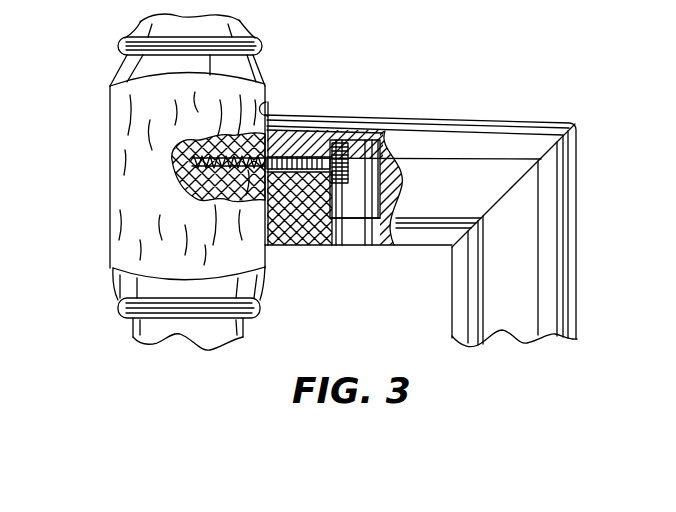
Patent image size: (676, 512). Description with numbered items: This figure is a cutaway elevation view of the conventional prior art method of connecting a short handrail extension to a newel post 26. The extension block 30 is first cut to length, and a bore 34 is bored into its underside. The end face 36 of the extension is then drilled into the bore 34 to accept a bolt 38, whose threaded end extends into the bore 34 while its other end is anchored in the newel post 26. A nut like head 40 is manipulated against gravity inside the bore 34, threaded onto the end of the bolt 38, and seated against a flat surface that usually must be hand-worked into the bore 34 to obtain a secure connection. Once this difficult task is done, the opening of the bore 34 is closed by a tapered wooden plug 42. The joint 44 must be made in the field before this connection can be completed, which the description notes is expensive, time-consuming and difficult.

The newel post 26 is at (108, 117).
The extension block 30 is at (498, 118).
The bore 34 is at (400, 179).
The end face 36 is at (267, 103).
The bolt 38 is at (305, 145).
The nut like head 40 is at (377, 140).
The tapered wooden plug 42 is at (360, 242).
The joint 44 is at (503, 200).